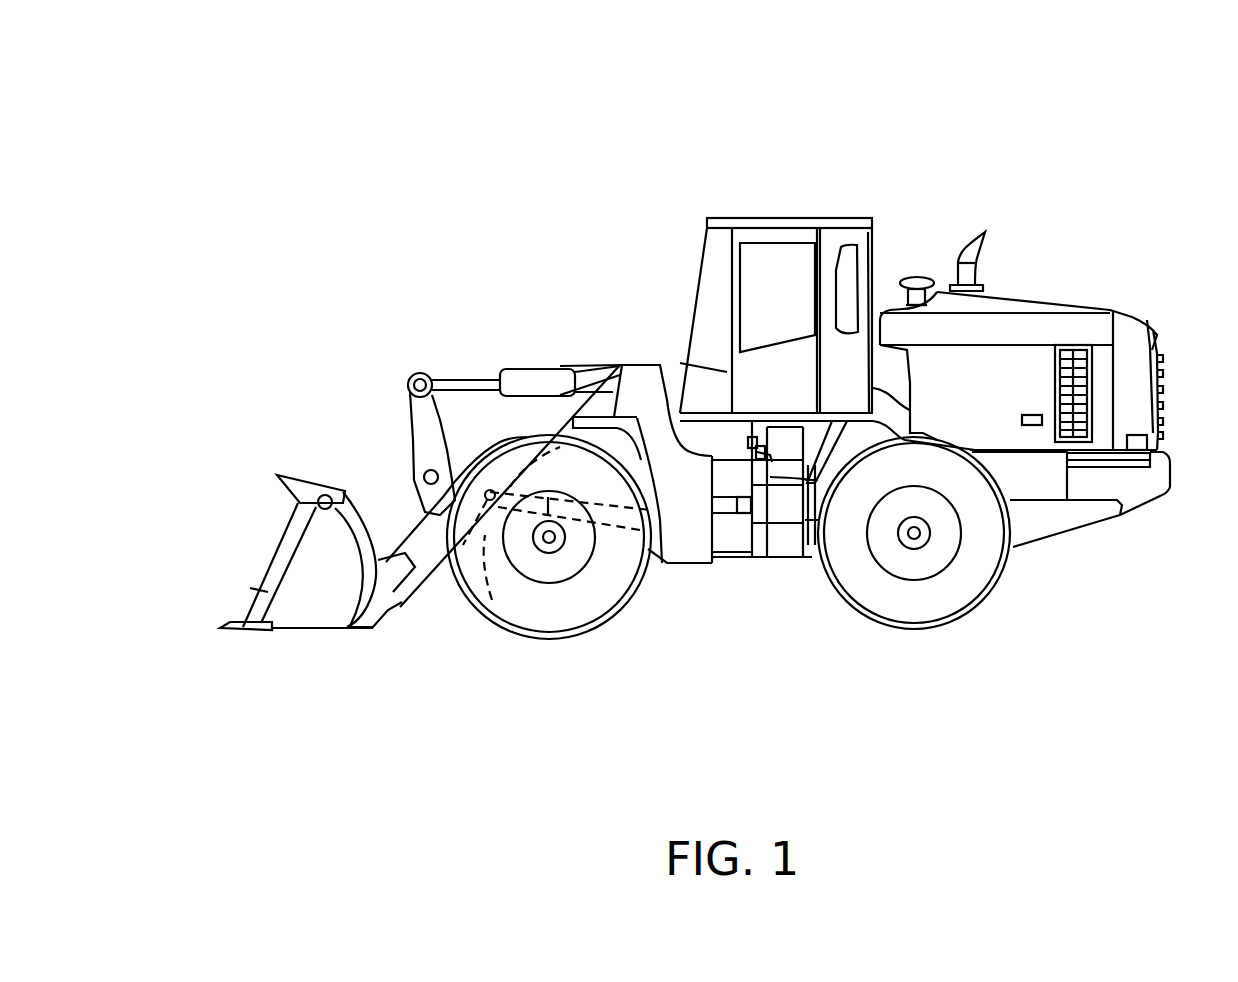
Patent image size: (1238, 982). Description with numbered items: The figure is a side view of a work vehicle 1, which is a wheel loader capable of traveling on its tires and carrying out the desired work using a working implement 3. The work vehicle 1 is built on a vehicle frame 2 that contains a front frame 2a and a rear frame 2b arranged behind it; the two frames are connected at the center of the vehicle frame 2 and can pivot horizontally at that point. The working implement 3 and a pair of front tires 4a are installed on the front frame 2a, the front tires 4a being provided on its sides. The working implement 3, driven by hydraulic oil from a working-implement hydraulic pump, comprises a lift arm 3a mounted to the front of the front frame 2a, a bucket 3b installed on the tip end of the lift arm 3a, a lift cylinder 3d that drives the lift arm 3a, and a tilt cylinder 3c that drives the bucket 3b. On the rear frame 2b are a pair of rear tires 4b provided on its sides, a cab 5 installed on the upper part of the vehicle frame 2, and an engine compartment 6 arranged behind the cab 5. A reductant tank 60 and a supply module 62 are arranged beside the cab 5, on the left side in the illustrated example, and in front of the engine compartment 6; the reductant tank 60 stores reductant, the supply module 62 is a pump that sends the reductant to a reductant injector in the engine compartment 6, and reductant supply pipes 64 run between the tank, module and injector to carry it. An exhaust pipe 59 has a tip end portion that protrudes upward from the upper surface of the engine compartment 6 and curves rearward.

The work vehicle 1 is at (1133, 133).
The vehicle frame 2 is at (793, 678).
The front frame 2a is at (679, 566).
The rear frame 2b is at (790, 562).
The working implement 3 is at (367, 460).
The lift arm 3a is at (487, 447).
The bucket 3b is at (253, 612).
The tilt cylinder 3c is at (542, 368).
The lift cylinder 3d is at (491, 615).
The front tires 4a is at (559, 612).
The rear tires 4b is at (917, 610).
The cab 5 is at (788, 205).
The engine compartment 6 is at (1033, 292).
The exhaust pipe 59 is at (974, 238).
The reductant tank 60 is at (748, 502).
The supply module 62 is at (755, 452).
The reductant supply pipes 64 is at (803, 548).